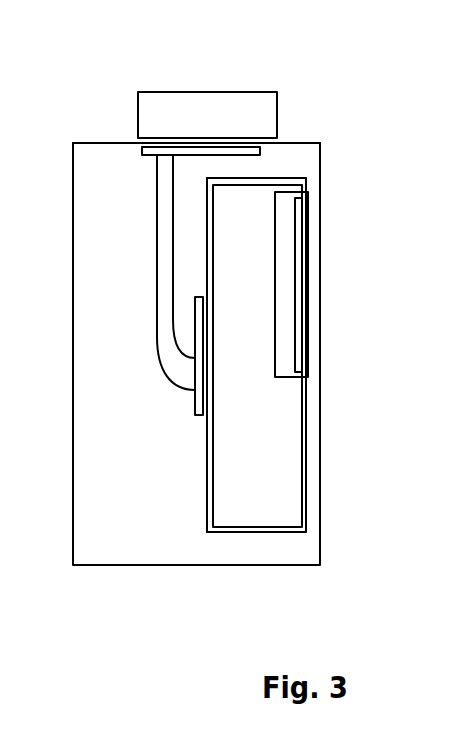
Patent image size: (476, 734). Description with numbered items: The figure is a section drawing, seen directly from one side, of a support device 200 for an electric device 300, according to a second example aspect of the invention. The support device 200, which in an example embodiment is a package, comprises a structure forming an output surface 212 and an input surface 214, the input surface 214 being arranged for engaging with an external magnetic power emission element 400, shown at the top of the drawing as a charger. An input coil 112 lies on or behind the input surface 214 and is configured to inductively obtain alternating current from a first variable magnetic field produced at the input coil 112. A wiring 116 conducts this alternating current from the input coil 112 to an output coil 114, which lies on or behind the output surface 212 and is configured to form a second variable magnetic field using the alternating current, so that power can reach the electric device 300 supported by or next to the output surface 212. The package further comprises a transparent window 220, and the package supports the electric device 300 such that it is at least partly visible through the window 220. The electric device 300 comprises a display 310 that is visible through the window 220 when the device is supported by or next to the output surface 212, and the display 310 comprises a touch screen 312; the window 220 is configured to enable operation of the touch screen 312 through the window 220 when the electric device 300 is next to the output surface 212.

The support device 200 is at (83, 56).
The input coil 112 is at (179, 108).
The external magnetic power emission element 400 is at (237, 92).
The input surface 214 is at (196, 100).
The wiring 116 is at (102, 272).
The output coil 114 is at (157, 382).
The transparent window 220 is at (305, 355).
The output surface 212 is at (253, 402).
The electric device 300 is at (307, 356).
The display 310 is at (339, 284).
The touch screen 312 is at (349, 285).